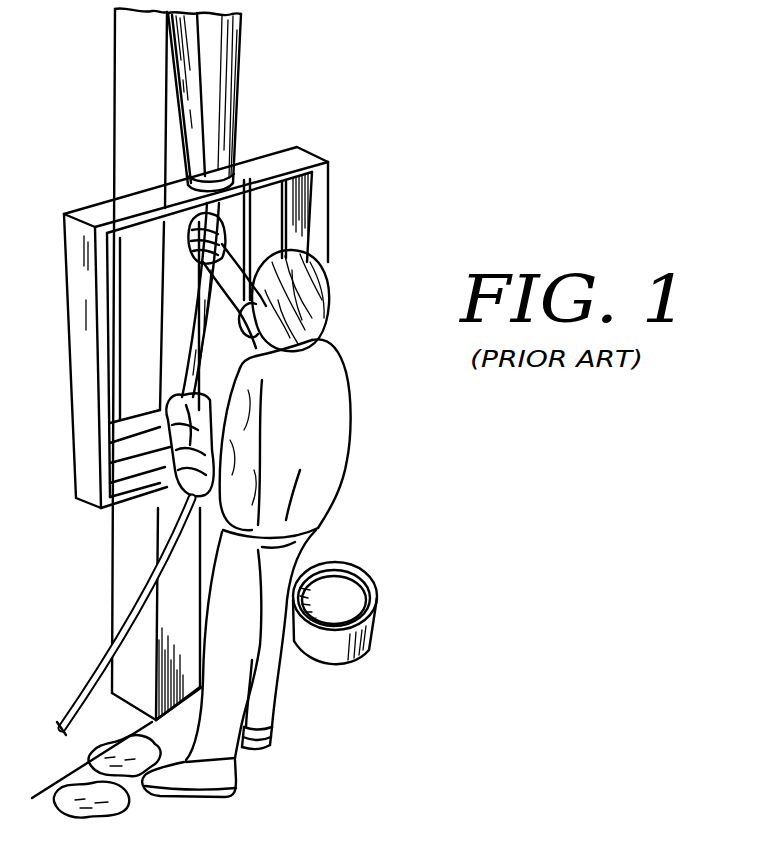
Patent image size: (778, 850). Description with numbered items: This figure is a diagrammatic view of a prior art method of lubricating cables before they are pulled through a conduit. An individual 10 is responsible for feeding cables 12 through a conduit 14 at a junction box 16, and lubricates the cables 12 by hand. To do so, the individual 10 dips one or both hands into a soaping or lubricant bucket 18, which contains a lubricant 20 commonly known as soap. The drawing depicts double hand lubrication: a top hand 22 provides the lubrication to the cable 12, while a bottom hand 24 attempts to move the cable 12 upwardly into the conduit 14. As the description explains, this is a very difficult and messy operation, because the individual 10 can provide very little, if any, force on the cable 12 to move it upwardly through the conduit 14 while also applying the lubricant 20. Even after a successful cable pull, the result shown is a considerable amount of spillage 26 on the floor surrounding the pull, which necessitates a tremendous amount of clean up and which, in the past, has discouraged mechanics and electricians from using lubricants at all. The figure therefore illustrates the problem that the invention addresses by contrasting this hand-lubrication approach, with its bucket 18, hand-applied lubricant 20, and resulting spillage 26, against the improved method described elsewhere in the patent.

The individual 10 is at (350, 331).
The cables 12 is at (140, 590).
The conduit 14 is at (223, 116).
The junction box 16 is at (302, 158).
The lubricant bucket 18 is at (377, 598).
The lubricant 20 is at (332, 600).
The top hand 22 is at (227, 244).
The bottom hand 24 is at (168, 397).
The spillage 26 is at (118, 752).